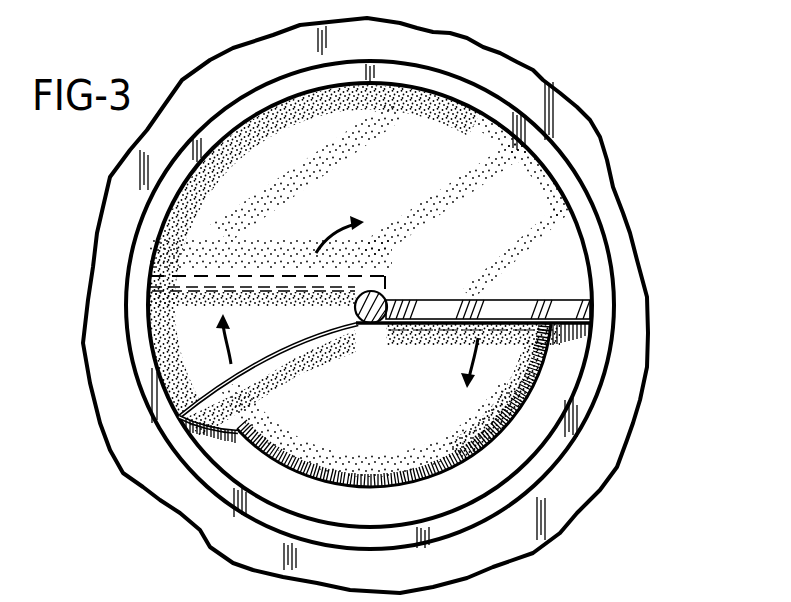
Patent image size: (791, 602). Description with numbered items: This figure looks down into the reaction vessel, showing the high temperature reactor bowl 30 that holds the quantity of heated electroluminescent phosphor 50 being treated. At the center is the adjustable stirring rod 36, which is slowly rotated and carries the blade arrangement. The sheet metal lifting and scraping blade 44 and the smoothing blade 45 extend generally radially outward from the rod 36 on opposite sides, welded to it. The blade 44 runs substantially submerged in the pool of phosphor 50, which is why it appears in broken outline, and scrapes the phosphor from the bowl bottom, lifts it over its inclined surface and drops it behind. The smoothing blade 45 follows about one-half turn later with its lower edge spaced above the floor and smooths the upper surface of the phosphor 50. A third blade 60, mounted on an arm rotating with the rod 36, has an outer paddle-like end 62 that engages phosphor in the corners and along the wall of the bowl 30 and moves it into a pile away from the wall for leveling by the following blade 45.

The reactor bowl 30 is at (550, 455).
The stirring rod 36 is at (381, 294).
The lifting and scraping blade 44 is at (271, 277).
The smoothing blade 45 is at (499, 305).
The electroluminescent phosphor 50 is at (379, 393).
The third blade 60 is at (277, 352).
The paddle-like end 62 is at (208, 432).